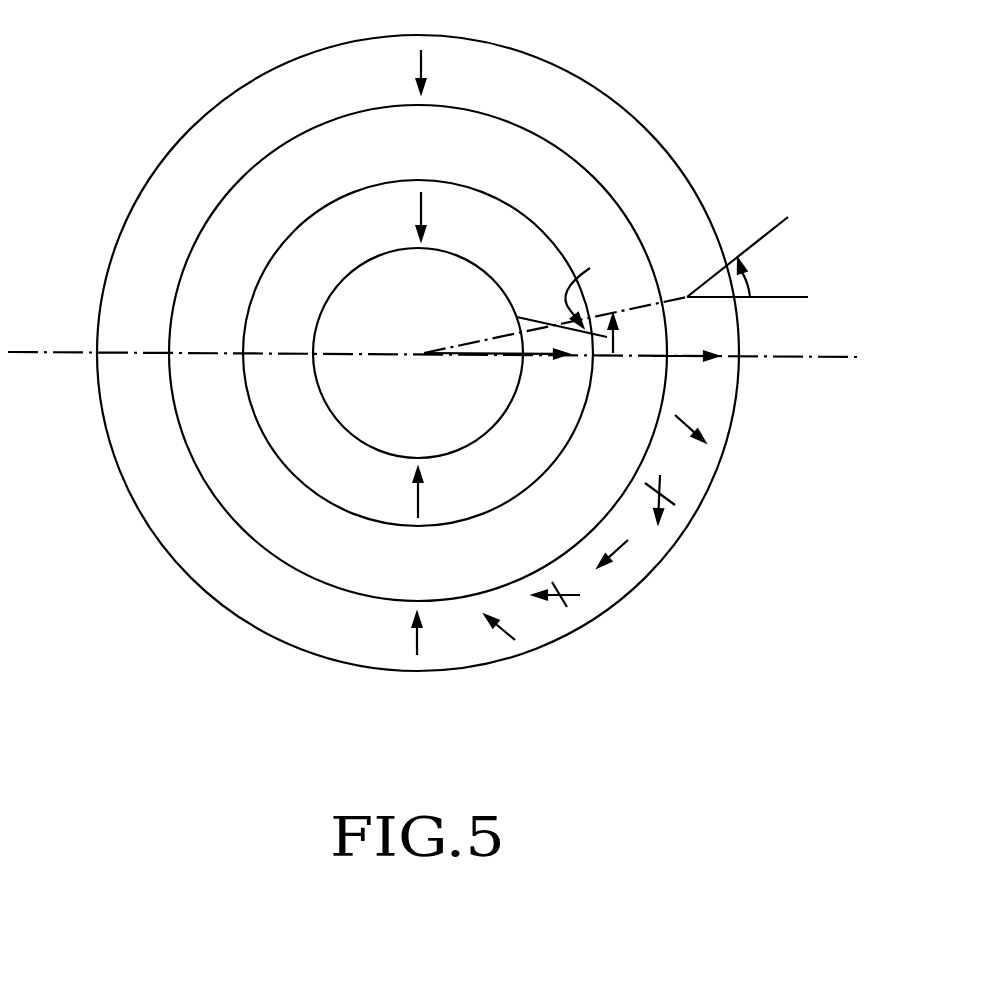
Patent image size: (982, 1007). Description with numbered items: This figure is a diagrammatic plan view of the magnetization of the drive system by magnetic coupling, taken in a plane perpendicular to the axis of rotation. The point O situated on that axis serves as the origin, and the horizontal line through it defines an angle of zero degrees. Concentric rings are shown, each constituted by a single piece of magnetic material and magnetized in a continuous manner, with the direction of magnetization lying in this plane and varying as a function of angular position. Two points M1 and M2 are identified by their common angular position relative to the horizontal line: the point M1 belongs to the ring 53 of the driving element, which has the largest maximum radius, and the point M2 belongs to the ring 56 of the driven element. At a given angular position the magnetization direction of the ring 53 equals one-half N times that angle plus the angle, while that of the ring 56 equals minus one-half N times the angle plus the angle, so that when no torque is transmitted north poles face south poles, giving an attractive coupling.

The ring of the driving element 53 is at (542, 90).
The ring of the driven element 56 is at (298, 277).
The point M1 is at (734, 257).
The point M2 is at (562, 310).
The point O is at (484, 337).